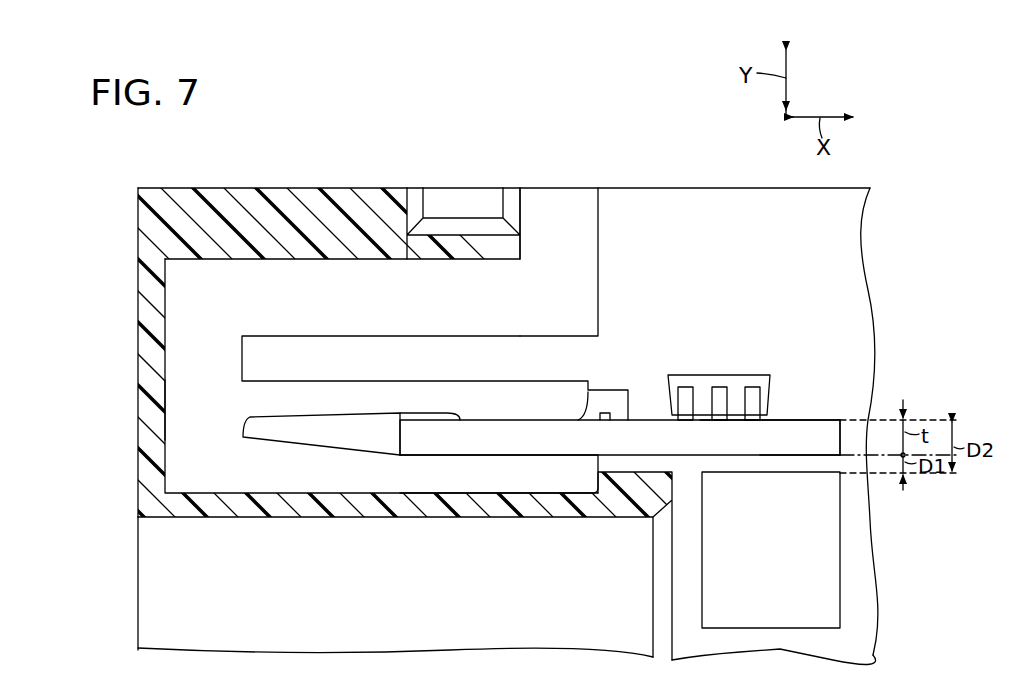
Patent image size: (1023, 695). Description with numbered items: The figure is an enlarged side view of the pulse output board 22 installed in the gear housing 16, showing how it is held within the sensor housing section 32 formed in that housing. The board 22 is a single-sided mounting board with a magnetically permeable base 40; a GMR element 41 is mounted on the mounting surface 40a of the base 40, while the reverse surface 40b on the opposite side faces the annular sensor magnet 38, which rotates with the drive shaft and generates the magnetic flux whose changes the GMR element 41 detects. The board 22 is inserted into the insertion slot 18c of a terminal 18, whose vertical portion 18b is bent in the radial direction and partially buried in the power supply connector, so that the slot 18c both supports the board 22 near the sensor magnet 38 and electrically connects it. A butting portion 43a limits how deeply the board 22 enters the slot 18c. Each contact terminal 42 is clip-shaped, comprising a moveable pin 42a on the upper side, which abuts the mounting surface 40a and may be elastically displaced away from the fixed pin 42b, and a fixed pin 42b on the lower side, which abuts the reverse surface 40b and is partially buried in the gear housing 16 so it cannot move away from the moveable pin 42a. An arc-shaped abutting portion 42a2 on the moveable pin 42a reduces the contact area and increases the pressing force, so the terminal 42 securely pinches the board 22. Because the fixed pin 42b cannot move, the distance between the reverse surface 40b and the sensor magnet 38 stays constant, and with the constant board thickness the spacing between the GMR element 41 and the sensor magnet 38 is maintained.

The gear housing 16 is at (135, 556).
The terminal 18 is at (602, 213).
The vertical portion 18b is at (582, 243).
The insertion slot 18c is at (162, 417).
The pulse output board 22 is at (793, 418).
The sensor housing section 32 is at (802, 261).
The sensor magnet 38 is at (840, 583).
The base 40 is at (648, 437).
The mounting surface 40a is at (825, 419).
The reverse surface 40b is at (793, 457).
The GMR element 41 is at (757, 375).
The contact terminal 42 is at (462, 435).
The moveable pin 42a is at (567, 381).
The abutting portion 42a2 is at (520, 421).
The fixed pin 42b is at (508, 473).
The butting portion 43a is at (398, 417).